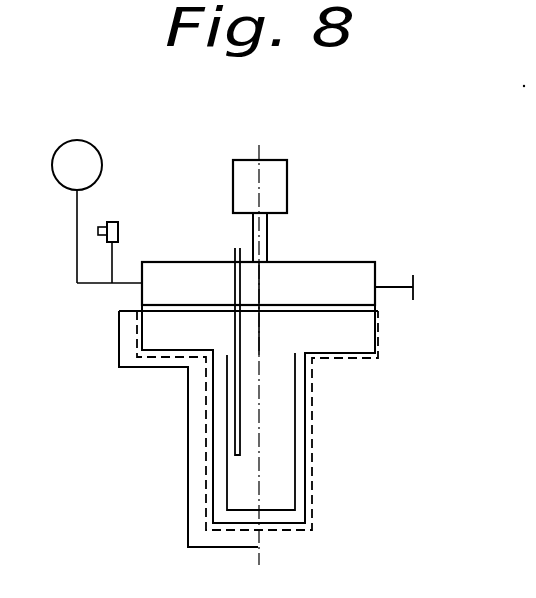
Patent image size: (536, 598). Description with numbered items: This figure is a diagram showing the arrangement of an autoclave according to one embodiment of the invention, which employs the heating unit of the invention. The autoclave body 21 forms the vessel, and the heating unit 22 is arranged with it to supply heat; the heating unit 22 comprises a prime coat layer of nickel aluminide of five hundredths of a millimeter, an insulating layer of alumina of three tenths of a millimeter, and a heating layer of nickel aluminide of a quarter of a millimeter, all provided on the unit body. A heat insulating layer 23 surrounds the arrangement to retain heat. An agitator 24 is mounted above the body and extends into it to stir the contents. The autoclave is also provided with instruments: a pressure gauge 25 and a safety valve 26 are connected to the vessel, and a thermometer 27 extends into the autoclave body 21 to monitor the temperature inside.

The autoclave body 21 is at (333, 262).
The heating unit 22 is at (313, 403).
The heat insulating layer 23 is at (195, 460).
The agitator 24 is at (288, 166).
The pressure gauge 25 is at (87, 140).
The safety valve 26 is at (114, 221).
The thermometer 27 is at (233, 253).